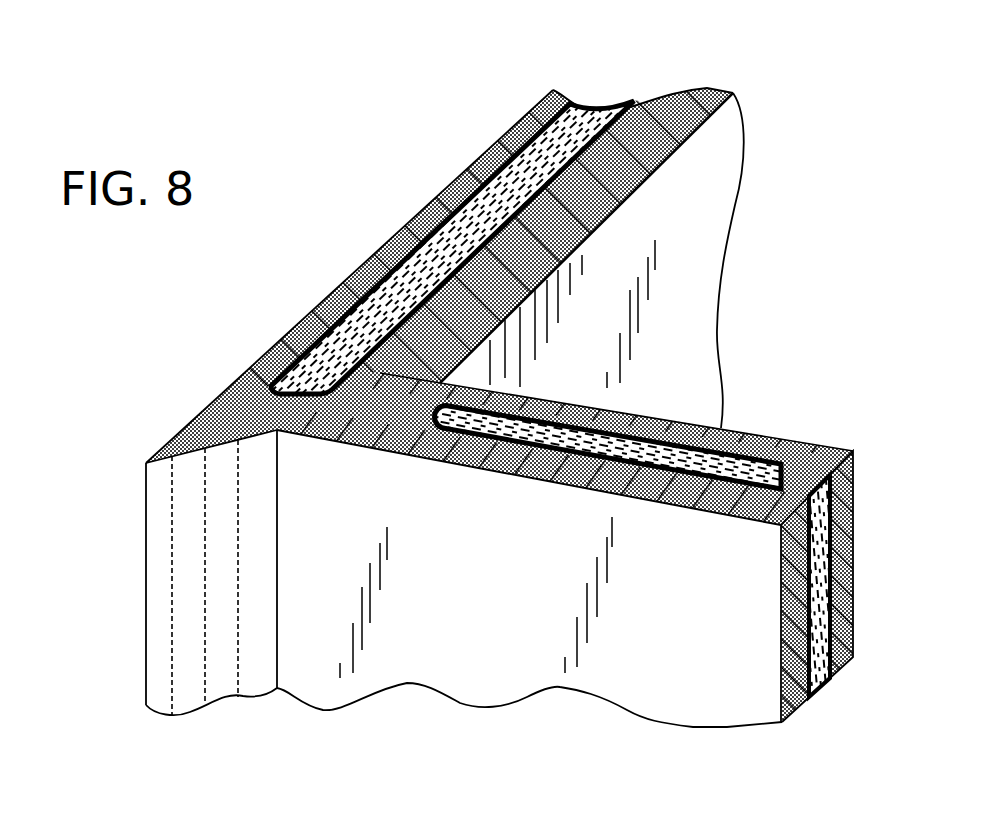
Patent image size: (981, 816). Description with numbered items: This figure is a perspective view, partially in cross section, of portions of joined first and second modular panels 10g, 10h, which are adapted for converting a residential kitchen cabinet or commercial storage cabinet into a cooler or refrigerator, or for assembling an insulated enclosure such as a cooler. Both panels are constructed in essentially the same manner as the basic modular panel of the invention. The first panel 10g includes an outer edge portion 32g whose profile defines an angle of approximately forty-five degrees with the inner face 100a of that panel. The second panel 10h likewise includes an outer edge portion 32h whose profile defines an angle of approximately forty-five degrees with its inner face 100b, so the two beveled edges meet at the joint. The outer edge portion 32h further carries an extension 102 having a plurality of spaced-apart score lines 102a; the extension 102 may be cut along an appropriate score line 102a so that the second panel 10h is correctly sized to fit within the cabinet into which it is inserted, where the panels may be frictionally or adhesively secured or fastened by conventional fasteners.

The inner face 100a is at (782, 437).
The inner face 100b is at (728, 137).
The first modular panel 10g is at (707, 690).
The second modular panel 10h is at (707, 214).
The outer edge portion 32g is at (468, 356).
The outer edge portion 32h is at (322, 345).
The extension 102 is at (182, 428).
The score lines 102a is at (238, 625).